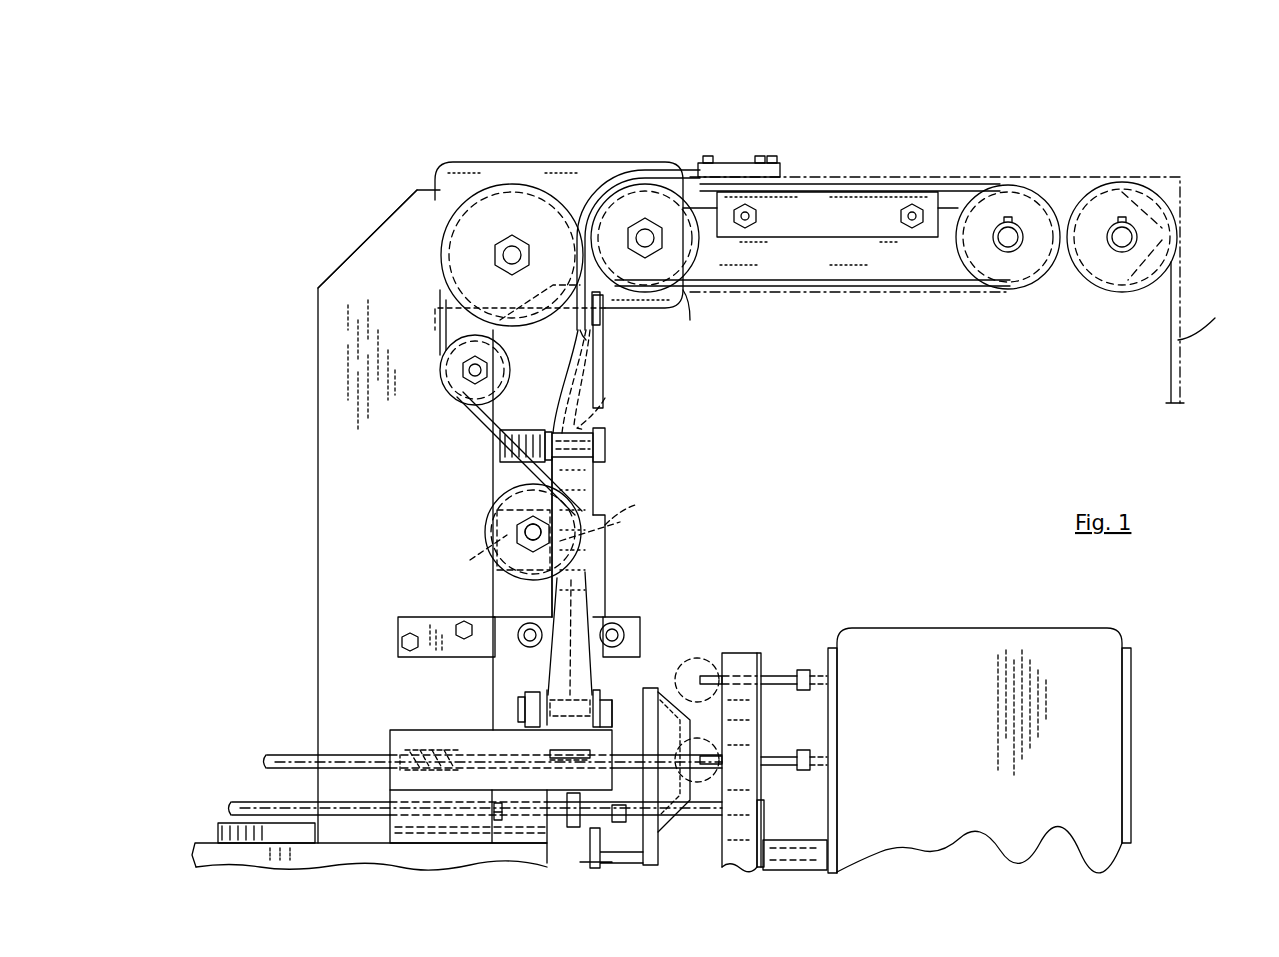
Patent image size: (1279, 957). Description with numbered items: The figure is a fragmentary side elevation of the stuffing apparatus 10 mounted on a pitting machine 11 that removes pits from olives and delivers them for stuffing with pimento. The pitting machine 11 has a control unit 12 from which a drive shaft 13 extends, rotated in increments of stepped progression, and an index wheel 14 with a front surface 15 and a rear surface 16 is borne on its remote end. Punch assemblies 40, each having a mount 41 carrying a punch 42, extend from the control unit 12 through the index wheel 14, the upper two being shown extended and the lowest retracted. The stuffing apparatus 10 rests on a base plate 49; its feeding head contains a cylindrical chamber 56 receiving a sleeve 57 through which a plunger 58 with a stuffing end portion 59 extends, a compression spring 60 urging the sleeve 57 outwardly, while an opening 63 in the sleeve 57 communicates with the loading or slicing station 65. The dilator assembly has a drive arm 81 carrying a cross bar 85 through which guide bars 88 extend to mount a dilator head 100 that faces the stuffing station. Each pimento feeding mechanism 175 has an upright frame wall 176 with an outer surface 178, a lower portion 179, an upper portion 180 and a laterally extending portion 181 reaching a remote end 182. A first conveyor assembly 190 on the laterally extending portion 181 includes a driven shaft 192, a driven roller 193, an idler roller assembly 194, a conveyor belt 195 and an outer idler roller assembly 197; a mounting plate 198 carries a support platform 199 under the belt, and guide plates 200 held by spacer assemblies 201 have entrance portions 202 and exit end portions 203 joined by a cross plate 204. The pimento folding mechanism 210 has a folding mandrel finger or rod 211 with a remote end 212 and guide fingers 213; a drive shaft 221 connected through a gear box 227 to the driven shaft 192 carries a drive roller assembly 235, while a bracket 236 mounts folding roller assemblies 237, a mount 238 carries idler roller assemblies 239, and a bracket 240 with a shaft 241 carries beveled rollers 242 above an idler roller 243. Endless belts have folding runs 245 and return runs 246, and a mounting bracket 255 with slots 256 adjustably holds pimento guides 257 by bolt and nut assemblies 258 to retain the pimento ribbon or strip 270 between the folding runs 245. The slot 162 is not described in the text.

The stuffing apparatus 10 is at (1010, 106).
The pitting machine 11 is at (963, 609).
The control unit 12 is at (979, 750).
The drive shaft 13 is at (820, 870).
The index wheel 14 is at (733, 653).
The front surface 15 is at (722, 658).
The rear surface 16 is at (760, 658).
The punch assembly 40 is at (796, 780).
The mount 41 is at (830, 683).
The punch 42 is at (768, 760).
The base plate 49 is at (205, 840).
The cylindrical chamber 56 is at (440, 750).
The sleeve 57 is at (625, 752).
The plunger 58 is at (277, 753).
The stuffing end portion 59 is at (712, 692).
The compression spring 60 is at (420, 745).
The opening 63 is at (548, 700).
The loading or slicing station 65 is at (570, 633).
The drive arm 81 is at (248, 798).
The cross bar 85 is at (572, 830).
The guide bar 88 is at (497, 800).
The dilator head 100 is at (675, 820).
The slot 162 is at (553, 752).
The pimento feeding mechanism 175 is at (306, 342).
The frame wall 176 is at (318, 481).
The outer surface 178 is at (452, 530).
The lower portion 179 is at (471, 793).
The upper portion 180 is at (365, 250).
The laterally extending portion 181 is at (752, 270).
The remote end 182 is at (1182, 242).
The first conveyor assembly 190 is at (905, 176).
The driven shaft 192 is at (645, 230).
The driven roller 193 is at (695, 280).
The idler roller assembly 194 is at (1040, 208).
The conveyor belt 195 is at (922, 290).
The outer idler roller assembly 197 is at (1150, 188).
The mounting plate 198 is at (822, 265).
The support platform 199 is at (836, 190).
The guide plate 200 is at (600, 205).
The spacer assembly 201 is at (710, 156).
The entrance portion 202 is at (778, 160).
The exit end portion 203 is at (588, 330).
The cross plate 204 is at (606, 318).
The pimento folding mechanism 210 is at (680, 378).
The folding mandrel finger or rod 211 is at (583, 377).
The remote end 212 is at (608, 398).
The guide finger 213 is at (605, 378).
The drive shaft 221 is at (512, 246).
The gear box 227 is at (488, 162).
The drive roller assembly 235 is at (445, 215).
The bracket 236 is at (530, 430).
The folding roller assembly 237 is at (607, 445).
The mount 238 is at (525, 705).
The idler roller assembly 239 is at (610, 718).
The bracket 240 is at (500, 560).
The shaft 241 is at (530, 525).
The beveled roller 242 is at (486, 532).
The idler roller 243 is at (448, 376).
The folding run 245 is at (600, 482).
The return run 246 is at (478, 440).
The mounting bracket 255 is at (410, 618).
The slot 256 is at (622, 635).
The pimento guide 257 is at (632, 552).
The bolt and nut assembly 258 is at (616, 622).
The pimento ribbon or strip 270 is at (1224, 321).